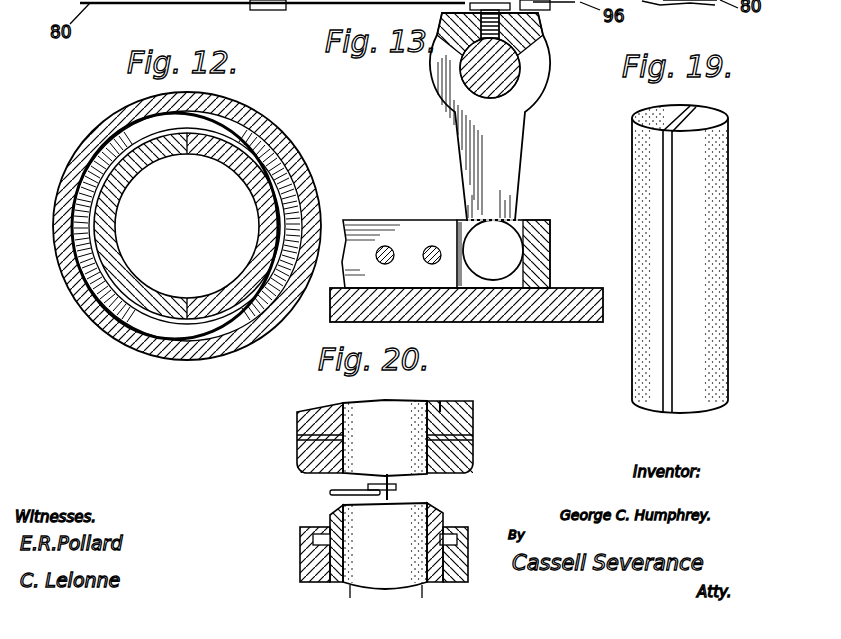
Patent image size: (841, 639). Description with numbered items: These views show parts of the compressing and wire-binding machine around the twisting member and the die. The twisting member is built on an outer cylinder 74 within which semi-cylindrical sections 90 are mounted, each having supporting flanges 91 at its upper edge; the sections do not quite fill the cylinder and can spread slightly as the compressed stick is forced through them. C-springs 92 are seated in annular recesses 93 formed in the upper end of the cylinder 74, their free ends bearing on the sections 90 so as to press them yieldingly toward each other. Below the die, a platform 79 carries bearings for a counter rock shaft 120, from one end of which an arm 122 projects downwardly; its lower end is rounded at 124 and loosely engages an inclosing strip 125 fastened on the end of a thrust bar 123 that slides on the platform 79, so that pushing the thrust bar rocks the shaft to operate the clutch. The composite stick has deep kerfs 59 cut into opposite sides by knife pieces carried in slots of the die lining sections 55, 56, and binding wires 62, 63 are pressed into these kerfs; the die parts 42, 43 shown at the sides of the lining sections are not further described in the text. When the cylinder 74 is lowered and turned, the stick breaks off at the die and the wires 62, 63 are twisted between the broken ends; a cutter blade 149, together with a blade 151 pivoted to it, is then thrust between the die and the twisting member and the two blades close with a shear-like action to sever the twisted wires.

In FIG. 12, the outer cylinder 74 is at (63, 277).
In FIG. 20, the outer cylinder 74 is at (308, 560).
In FIG. 12, the semi-cylindrical sections 90 is at (222, 151).
In FIG. 12, the C-springs 92 is at (217, 127).
In FIG. 20, the C-springs 92 is at (312, 535).
In FIG. 12, the annular recesses 93 is at (292, 196).
In FIG. 20, the annular recesses 93 is at (452, 540).
In FIG. 13, the counter rock shaft 120 is at (500, 79).
In FIG. 13, the arm 122 is at (490, 111).
In FIG. 13, the thrust bar 123 is at (350, 232).
In FIG. 13, the rounded lower end 124 is at (506, 247).
In FIG. 13, the inclosing strip 125 is at (552, 224).
In FIG. 13, the platform 79 is at (530, 312).
In FIG. 19, the kerfs 59 is at (698, 108).
In FIG. 19, the binding wire 62 is at (678, 418).
In FIG. 20, the binding wire 62 is at (297, 438).
In FIG. 19, the binding wire 63 is at (685, 418).
In FIG. 20, the binding wire 63 is at (473, 438).
In FIG. 20, the left clamp jaw 42 is at (297, 420).
In FIG. 20, the right clamp jaw 43 is at (474, 418).
In FIG. 20, the lining section 55 is at (335, 405).
In FIG. 20, the lining section 56 is at (440, 405).
In FIG. 20, the cutter blade 149 is at (333, 493).
In FIG. 20, the blade 151 is at (395, 487).
In FIG. 20, the supporting flanges 91 is at (458, 527).